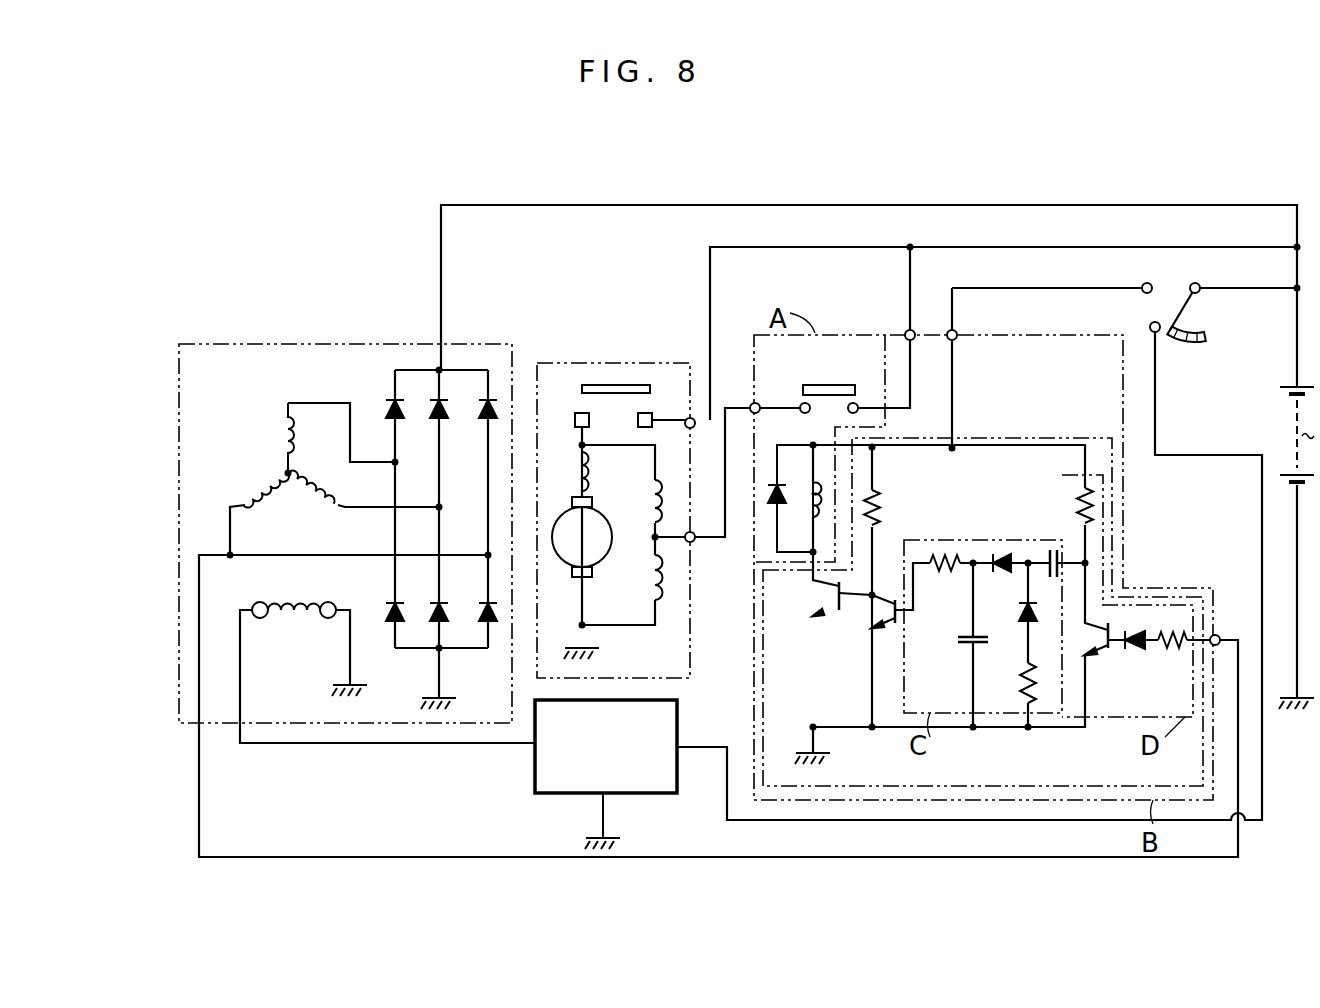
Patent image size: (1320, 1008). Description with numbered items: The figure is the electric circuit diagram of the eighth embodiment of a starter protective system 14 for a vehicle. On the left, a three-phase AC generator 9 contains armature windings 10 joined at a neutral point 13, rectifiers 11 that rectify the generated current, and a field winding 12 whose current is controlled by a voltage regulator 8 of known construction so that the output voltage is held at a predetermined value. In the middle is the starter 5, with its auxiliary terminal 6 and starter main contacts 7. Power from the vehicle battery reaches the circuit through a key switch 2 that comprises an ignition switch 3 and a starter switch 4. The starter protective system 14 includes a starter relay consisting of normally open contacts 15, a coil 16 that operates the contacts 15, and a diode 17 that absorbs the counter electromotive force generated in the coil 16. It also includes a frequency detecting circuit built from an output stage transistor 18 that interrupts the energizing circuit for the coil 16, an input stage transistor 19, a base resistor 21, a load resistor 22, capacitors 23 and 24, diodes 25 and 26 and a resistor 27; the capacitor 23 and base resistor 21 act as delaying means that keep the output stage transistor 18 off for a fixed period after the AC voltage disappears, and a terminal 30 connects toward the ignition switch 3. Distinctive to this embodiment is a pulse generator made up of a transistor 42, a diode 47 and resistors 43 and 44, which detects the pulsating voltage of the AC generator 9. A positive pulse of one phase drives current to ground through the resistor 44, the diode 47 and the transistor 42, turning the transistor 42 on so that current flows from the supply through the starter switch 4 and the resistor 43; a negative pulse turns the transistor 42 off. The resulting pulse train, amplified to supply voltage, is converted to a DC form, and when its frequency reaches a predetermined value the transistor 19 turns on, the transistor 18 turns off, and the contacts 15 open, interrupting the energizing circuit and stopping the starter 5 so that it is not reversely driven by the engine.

The key switch 2 is at (1178, 288).
The ignition switch 3 is at (1144, 326).
The starter switch 4 is at (1147, 283).
The starter 5 is at (567, 360).
The auxiliary terminal of the starter 6 is at (693, 542).
The starter main contacts 7 is at (582, 389).
The voltage regulator 8 is at (535, 780).
The generator 9 is at (337, 344).
The armature windings 10 is at (288, 424).
The rectifiers 11 is at (390, 383).
The field winding 12 is at (295, 618).
The neutral point 13 is at (286, 470).
The starter protective system 14 is at (750, 718).
The normally open contacts 15 is at (814, 385).
The coil 16 is at (810, 488).
The diode 17 is at (783, 505).
The output stage transistor 18 is at (809, 603).
The input stage transistor 19 is at (870, 624).
The base resistor 21 is at (938, 555).
The load resistor 22 is at (880, 500).
The capacitor 23 is at (954, 640).
The capacitor 24 is at (1050, 552).
The diode 25 is at (1000, 554).
The diode 26 is at (1018, 612).
The resistor 27 is at (1020, 680).
The terminal 30 is at (1218, 636).
The transistor 42 is at (1090, 653).
The resistor 43 is at (1077, 500).
The resistor 44 is at (1172, 652).
The diode 47 is at (1137, 652).